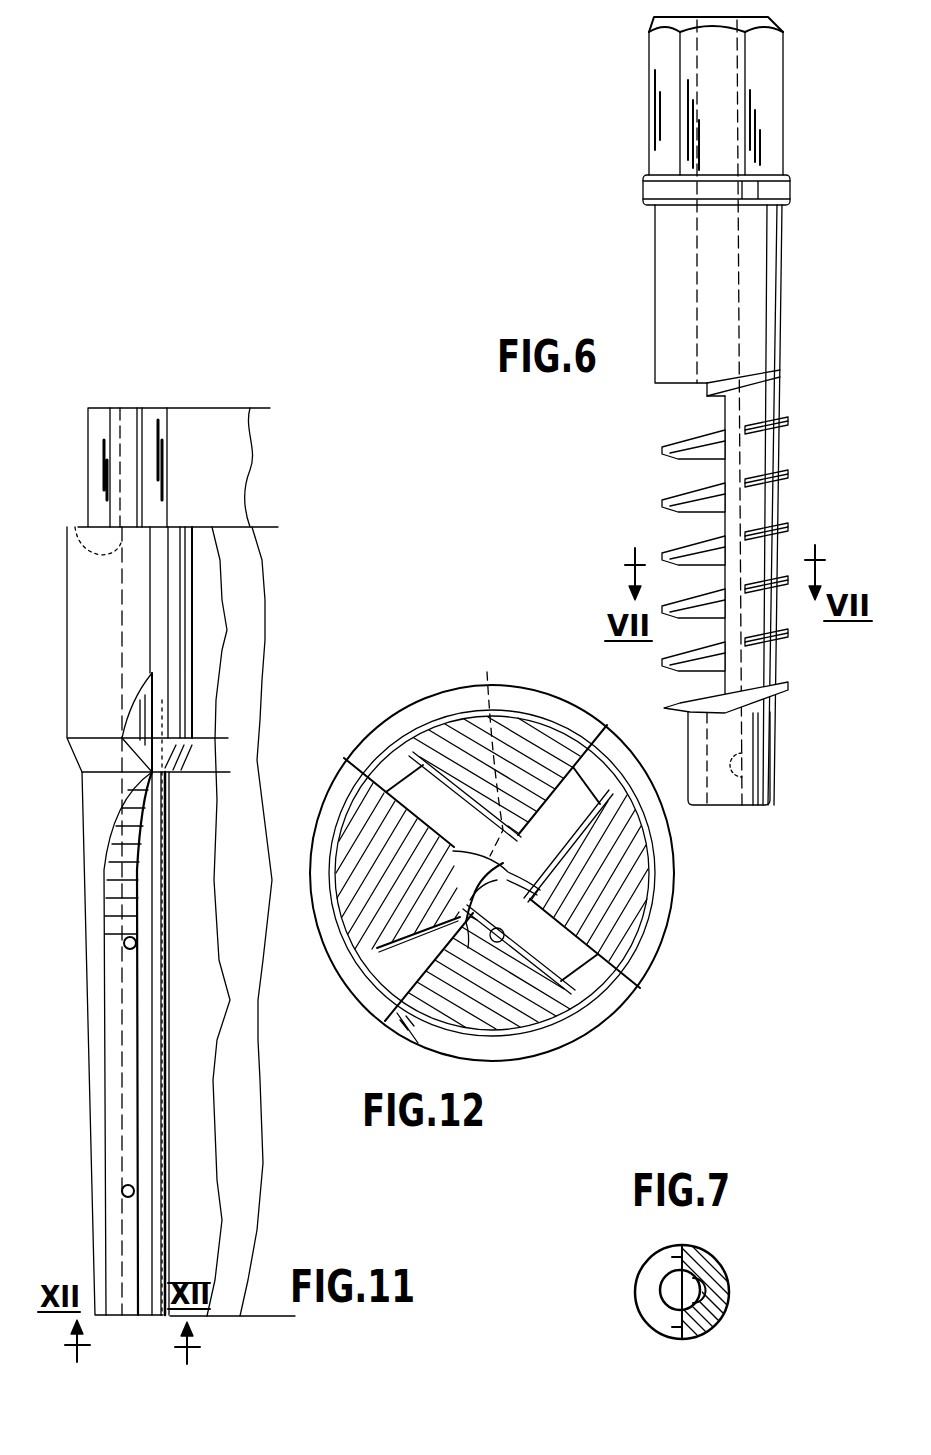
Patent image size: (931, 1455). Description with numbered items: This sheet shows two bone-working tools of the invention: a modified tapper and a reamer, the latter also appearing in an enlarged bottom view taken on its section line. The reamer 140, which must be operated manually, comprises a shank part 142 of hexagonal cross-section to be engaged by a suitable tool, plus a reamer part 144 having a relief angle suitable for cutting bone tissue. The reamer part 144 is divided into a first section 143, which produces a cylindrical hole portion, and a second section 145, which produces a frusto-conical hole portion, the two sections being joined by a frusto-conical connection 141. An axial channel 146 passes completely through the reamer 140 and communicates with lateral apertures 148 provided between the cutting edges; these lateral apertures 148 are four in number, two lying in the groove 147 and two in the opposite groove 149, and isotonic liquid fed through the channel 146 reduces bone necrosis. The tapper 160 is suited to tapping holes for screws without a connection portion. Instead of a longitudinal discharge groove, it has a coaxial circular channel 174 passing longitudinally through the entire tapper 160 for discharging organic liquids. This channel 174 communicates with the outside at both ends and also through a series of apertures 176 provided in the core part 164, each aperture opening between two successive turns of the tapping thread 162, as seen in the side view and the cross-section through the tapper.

In FIG. 11, the reamer 140 is at (123, 1007).
In FIG. 12, the reamer 140 is at (672, 952).
In FIG. 11, the frusto-conical connection 141 is at (190, 757).
In FIG. 11, the shank part 142 is at (193, 467).
In FIG. 11, the first section 143 is at (194, 921).
In FIG. 11, the reamer part 144 is at (264, 921).
In FIG. 11, the second section 145 is at (232, 921).
In FIG. 11, the axial channel 146 is at (68, 528).
In FIG. 12, the axial channel 146 is at (476, 744).
In FIG. 11, the groove 147 is at (132, 1253).
In FIG. 12, the groove 147 is at (528, 960).
In FIG. 11, the lateral apertures 148 is at (136, 940).
In FIG. 12, the lateral apertures 148 is at (498, 942).
In FIG. 12, the opposite groove 149 is at (535, 752).
In FIG. 6, the tapper 160 is at (650, 350).
In FIG. 7, the tapper 160 is at (732, 1272).
In FIG. 6, the tapping thread 162 is at (776, 530).
In FIG. 6, the core part 164 is at (765, 656).
In FIG. 6, the coaxial circular channel 174 is at (705, 270).
In FIG. 7, the coaxial circular channel 174 is at (706, 1303).
In FIG. 6, the apertures 176 is at (715, 544).